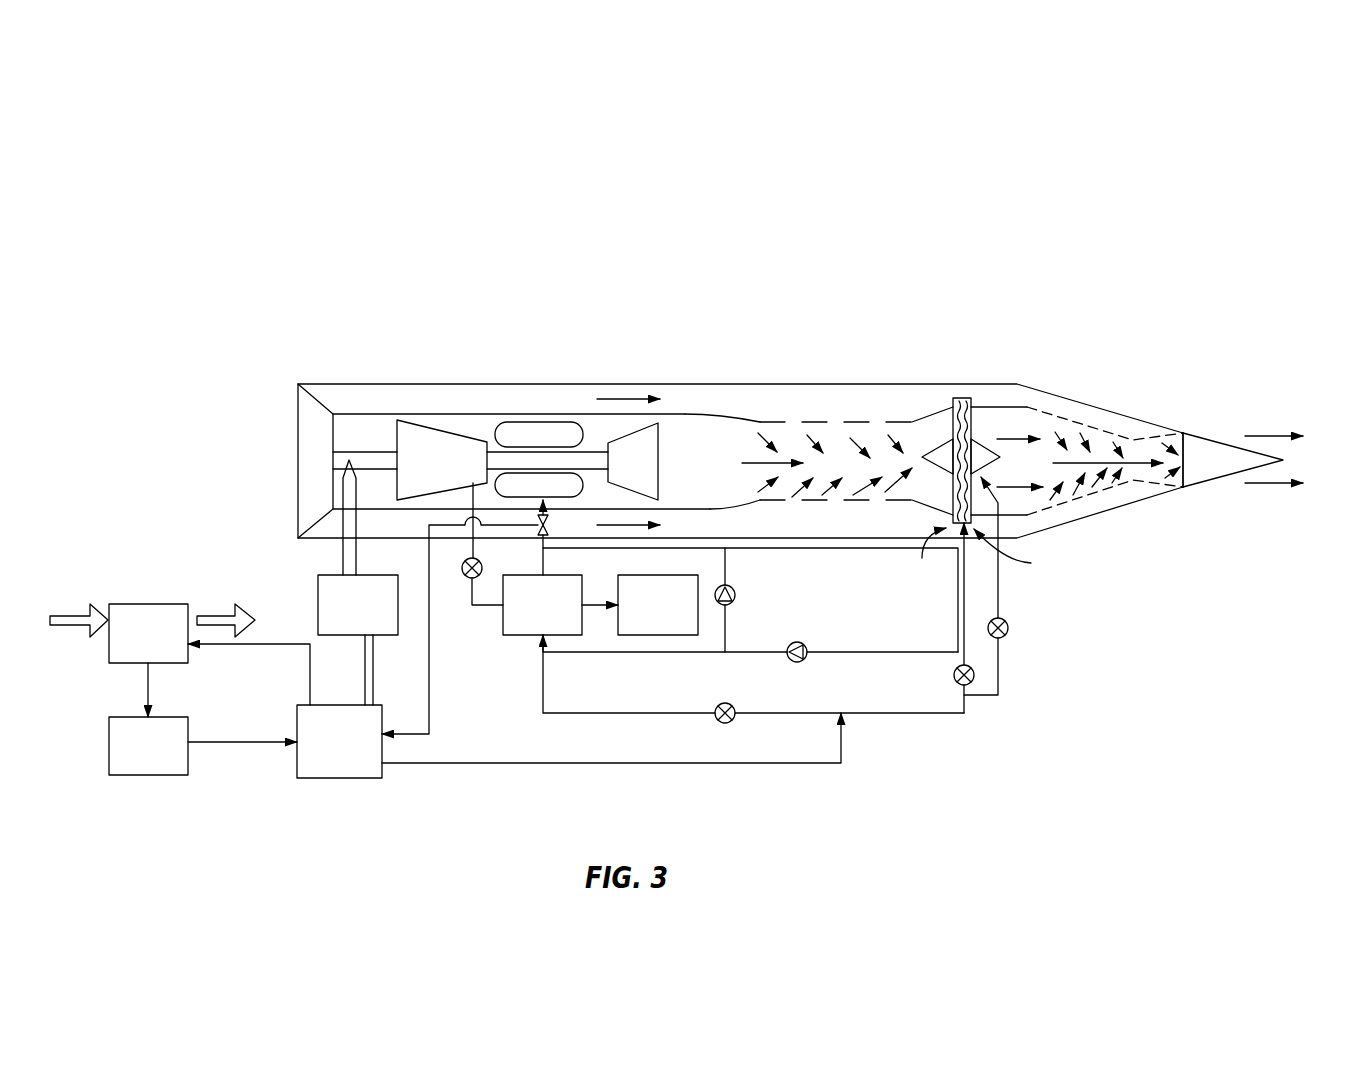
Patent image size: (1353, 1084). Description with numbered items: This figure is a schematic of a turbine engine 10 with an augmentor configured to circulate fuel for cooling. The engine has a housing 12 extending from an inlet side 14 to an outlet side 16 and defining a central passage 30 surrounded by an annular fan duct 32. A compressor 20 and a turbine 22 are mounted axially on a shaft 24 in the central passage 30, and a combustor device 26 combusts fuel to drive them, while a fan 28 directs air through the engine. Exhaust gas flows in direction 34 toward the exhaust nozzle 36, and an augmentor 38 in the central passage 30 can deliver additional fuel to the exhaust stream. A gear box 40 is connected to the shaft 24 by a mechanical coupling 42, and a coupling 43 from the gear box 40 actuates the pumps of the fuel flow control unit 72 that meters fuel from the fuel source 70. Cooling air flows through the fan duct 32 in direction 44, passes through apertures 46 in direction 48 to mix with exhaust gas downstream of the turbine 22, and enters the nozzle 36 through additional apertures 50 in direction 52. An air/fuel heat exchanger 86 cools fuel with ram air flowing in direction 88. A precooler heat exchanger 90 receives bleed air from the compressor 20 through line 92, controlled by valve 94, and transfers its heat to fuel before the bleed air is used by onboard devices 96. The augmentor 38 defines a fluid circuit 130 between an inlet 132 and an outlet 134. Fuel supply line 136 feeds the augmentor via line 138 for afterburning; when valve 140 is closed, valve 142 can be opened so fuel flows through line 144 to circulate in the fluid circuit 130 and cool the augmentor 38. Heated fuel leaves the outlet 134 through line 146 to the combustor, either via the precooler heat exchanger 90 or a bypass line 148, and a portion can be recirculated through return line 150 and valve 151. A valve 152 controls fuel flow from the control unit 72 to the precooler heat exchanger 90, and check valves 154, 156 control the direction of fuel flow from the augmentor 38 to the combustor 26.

The turbine engine 10 is at (888, 205).
The housing 12 is at (363, 383).
The inlet side 14 is at (270, 402).
The outlet side 16 is at (1204, 392).
The compressor 20 is at (455, 432).
The turbine 22 is at (645, 428).
The shaft 24 is at (592, 453).
The combustor device 26 is at (540, 422).
The fan 28 is at (313, 461).
The central passage 30 is at (680, 435).
The fan duct 32 is at (345, 403).
The direction of exhaust gas flow 34 is at (781, 460).
The exhaust nozzle 36 is at (1203, 485).
The augmentor 38 is at (934, 445).
The gear box 40 is at (318, 607).
The mechanical coupling 42 is at (343, 557).
The coupling 43 is at (375, 672).
The direction of fan duct air flow 44 is at (628, 397).
The apertures 46 is at (750, 418).
The direction of inward air flow 48 is at (812, 435).
The additional apertures 50 is at (1078, 421).
The direction of air entering nozzle 52 is at (1088, 440).
The fuel source 70 is at (148, 776).
The fuel flow control unit 72 is at (338, 779).
The air/fuel heat exchanger 86 is at (143, 604).
The direction of ram air flow 88 is at (55, 612).
The precooler heat exchanger 90 is at (518, 636).
The bleed air line 92 is at (472, 605).
The valve 94 is at (482, 566).
The onboard devices 96 is at (648, 636).
The fluid circuit 130 is at (965, 399).
The inlet 132 is at (1021, 555).
The outlet 134 is at (924, 559).
The fuel supply line 136 is at (752, 764).
The line 138 is at (998, 672).
The valve 140 is at (1008, 628).
The valve 142 is at (963, 686).
The line 144 is at (960, 642).
The line 146 is at (840, 651).
The bypass line 148 is at (725, 566).
The return line 150 is at (429, 690).
The valve 151 is at (543, 532).
The valve 152 is at (718, 722).
The check valve 154 is at (797, 663).
The check valve 156 is at (735, 597).